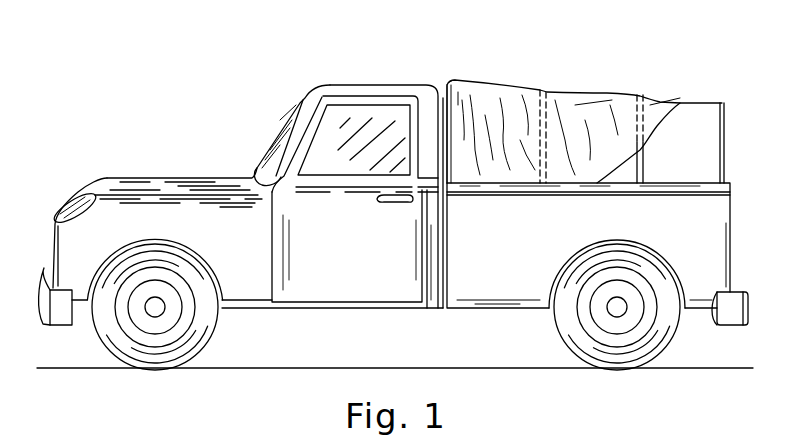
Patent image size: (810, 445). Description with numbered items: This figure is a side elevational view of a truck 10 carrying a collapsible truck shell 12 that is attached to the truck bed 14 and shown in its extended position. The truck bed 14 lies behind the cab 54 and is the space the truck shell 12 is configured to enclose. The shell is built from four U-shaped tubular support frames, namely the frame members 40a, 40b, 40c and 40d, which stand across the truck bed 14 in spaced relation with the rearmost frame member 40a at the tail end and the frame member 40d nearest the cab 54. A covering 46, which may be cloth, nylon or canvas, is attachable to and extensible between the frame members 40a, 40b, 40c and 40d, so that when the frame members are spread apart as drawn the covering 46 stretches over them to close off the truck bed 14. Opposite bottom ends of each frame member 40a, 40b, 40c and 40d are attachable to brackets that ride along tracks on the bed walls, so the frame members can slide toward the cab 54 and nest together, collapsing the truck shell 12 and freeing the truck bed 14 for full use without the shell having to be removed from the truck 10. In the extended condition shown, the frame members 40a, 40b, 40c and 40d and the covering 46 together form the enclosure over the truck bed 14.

The truck 10 is at (406, 192).
The collapsible truck shell 12 is at (601, 98).
The truck bed 14 is at (733, 213).
The frame member 40a is at (723, 133).
The frame member 40b is at (644, 166).
The frame member 40c is at (540, 130).
The frame member 40d is at (441, 90).
The covering 46 is at (565, 92).
The cab 54 is at (351, 84).